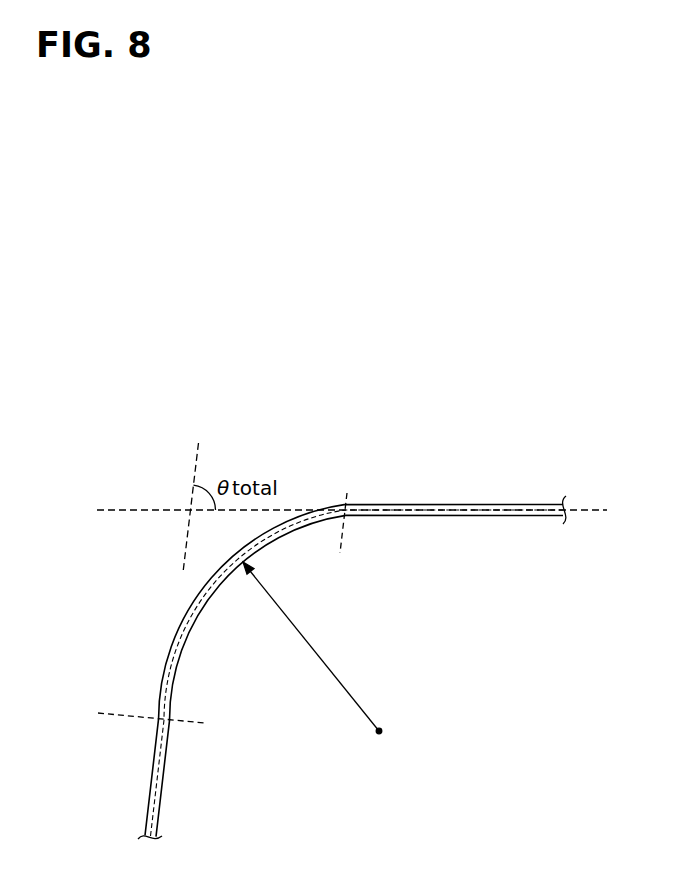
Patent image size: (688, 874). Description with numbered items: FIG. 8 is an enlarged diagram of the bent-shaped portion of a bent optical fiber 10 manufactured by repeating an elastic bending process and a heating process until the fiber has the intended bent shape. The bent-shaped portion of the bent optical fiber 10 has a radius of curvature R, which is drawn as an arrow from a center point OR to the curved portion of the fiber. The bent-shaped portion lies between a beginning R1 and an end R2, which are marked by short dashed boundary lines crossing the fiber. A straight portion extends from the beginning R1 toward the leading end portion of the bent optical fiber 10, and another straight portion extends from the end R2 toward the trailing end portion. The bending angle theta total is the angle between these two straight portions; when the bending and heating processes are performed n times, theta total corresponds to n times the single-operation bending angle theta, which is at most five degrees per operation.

The bent optical fiber 10 is at (491, 504).
The beginning R1 is at (171, 719).
The end R2 is at (347, 516).
The radius of curvature R is at (311, 646).
The center of bending radius OR is at (396, 730).